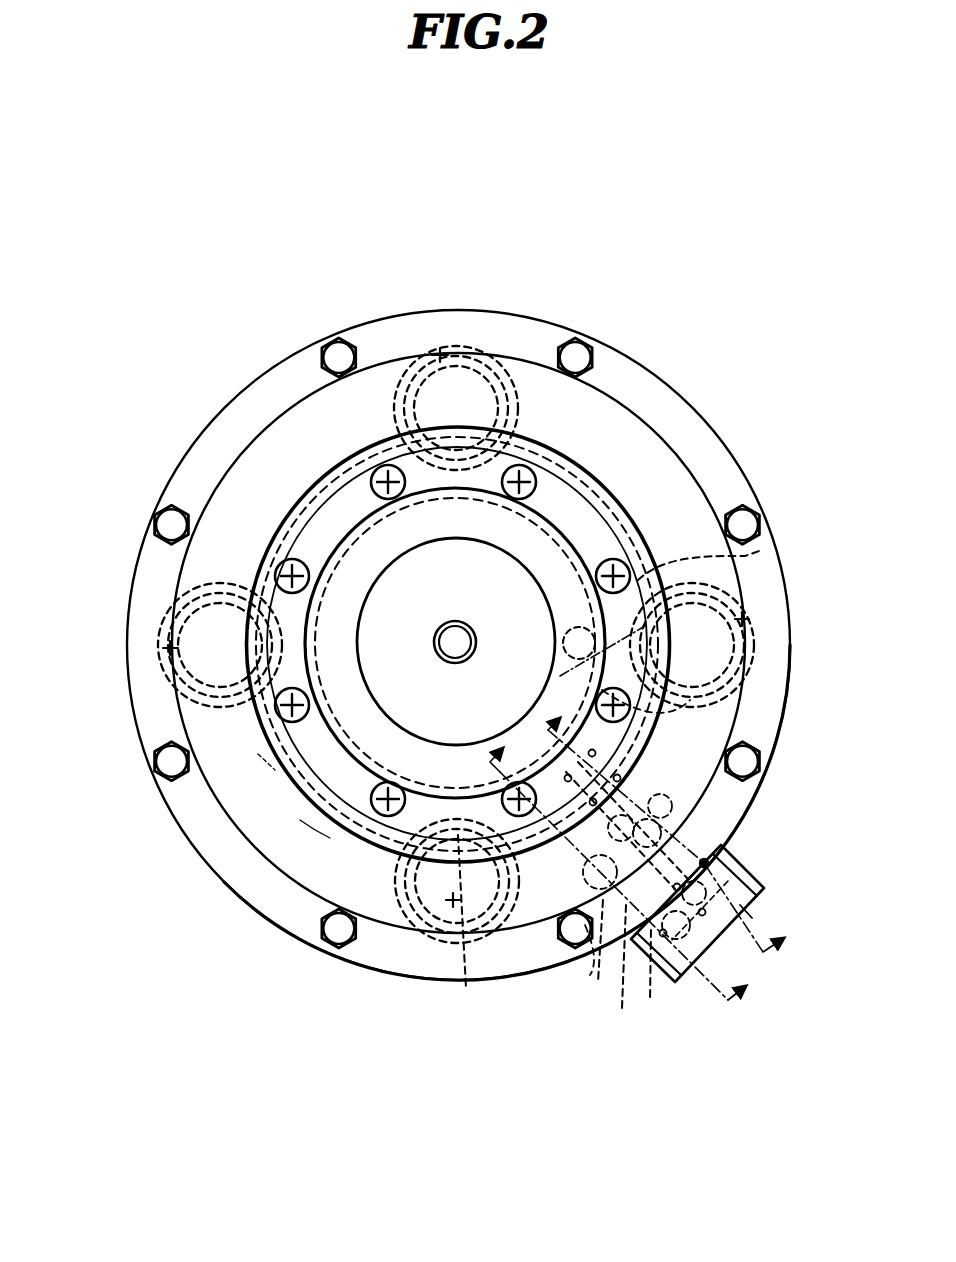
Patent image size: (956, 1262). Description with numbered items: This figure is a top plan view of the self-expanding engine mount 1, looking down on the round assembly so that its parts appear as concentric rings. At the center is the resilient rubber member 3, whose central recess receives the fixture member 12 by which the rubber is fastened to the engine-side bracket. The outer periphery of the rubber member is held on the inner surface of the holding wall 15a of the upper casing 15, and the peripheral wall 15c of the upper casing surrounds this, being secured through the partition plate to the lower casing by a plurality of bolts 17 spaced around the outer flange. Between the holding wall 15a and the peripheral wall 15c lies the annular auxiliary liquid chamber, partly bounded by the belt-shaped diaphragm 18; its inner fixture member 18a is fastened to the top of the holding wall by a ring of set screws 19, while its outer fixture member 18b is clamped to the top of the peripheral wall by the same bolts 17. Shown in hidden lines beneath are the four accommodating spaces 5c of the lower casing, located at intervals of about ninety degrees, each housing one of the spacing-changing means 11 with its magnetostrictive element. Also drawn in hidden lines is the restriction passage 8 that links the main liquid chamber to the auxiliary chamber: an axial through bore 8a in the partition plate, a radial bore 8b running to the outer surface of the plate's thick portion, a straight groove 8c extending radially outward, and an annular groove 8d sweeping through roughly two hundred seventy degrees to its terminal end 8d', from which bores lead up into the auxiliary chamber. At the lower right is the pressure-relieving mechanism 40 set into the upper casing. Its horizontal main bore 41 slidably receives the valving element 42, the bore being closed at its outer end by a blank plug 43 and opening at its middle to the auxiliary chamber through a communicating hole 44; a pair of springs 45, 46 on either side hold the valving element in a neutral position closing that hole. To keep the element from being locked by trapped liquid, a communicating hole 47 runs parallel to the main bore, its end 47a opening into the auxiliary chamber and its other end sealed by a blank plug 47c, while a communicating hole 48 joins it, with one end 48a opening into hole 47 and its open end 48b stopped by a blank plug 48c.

The self-expanding engine mount 1 is at (268, 338).
The resilient rubber member 3 is at (370, 568).
The accommodating spaces 5c is at (462, 345).
The restriction passage 8 is at (270, 760).
The through bore 8a is at (565, 645).
The bore 8b is at (565, 682).
The straight groove 8c is at (662, 742).
The annular groove 8d is at (738, 551).
The terminal end 8d' is at (470, 926).
The spacing-changing means 11 is at (438, 350).
The fixture member 12 is at (380, 597).
The upper casing 15 is at (605, 514).
The holding wall 15a is at (612, 503).
The peripheral wall 15c is at (640, 364).
The bolts 17 is at (572, 342).
The diaphragm 18 is at (262, 840).
The fixture member 18a is at (338, 785).
The fixture member 18b is at (372, 957).
The set screws 19 is at (388, 466).
The pressure-relieving mechanism 40 is at (766, 890).
The main bore 41 is at (655, 818).
The valving element 42 is at (703, 860).
The blank plug 43 is at (748, 904).
The communicating hole 44 is at (652, 795).
The spring 45 is at (584, 868).
The spring 46 is at (618, 836).
The communicating hole 47 is at (607, 970).
The one end 47a is at (589, 952).
The blank plug 47c is at (697, 977).
The communicating hole 48 is at (712, 942).
The one end 48a is at (682, 1000).
The open end 48b is at (752, 866).
The blank plug 48c is at (746, 862).